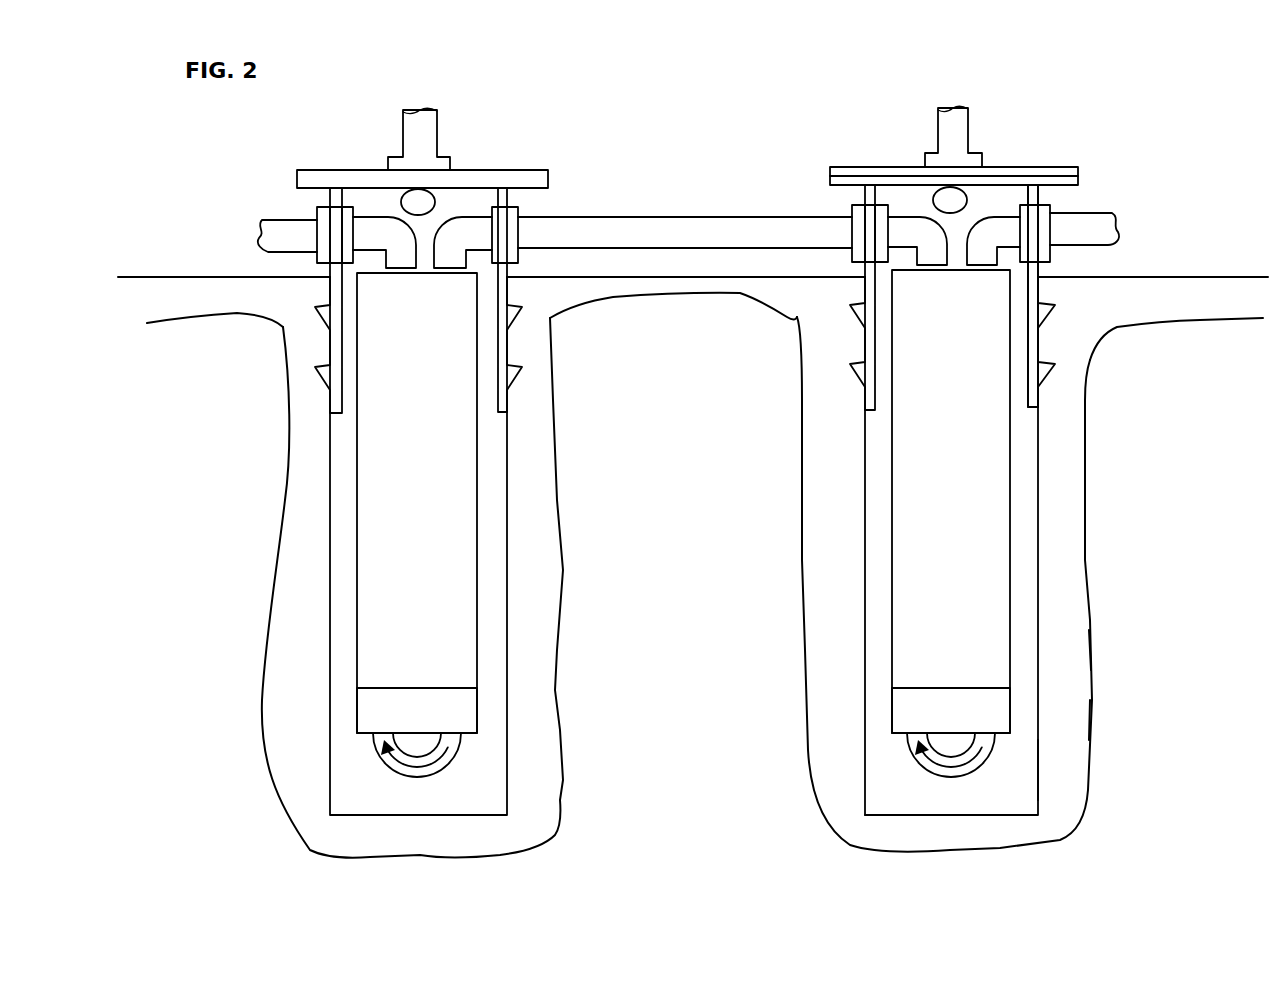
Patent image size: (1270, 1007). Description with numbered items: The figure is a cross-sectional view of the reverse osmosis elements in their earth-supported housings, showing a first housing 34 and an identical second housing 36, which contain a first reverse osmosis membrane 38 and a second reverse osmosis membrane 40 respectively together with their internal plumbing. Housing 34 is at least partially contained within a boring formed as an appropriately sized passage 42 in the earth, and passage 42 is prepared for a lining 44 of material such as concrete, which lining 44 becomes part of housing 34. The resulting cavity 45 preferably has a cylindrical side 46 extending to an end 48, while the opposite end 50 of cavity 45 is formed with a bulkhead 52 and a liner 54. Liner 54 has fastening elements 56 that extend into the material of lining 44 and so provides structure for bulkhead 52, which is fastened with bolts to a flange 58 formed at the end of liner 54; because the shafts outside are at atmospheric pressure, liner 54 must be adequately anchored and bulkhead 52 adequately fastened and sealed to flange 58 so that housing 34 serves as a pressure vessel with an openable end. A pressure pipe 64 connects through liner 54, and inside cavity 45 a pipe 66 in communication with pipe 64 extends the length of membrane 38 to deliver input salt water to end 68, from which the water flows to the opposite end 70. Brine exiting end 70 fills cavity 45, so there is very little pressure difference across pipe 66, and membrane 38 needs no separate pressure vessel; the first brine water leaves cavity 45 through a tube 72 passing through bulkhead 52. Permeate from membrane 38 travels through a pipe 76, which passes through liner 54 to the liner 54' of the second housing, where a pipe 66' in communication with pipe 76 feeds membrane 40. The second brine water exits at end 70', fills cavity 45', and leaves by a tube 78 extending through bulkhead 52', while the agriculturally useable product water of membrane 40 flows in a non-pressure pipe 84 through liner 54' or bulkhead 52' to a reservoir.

The first housing 34 is at (1088, 575).
The second housing 36 is at (560, 574).
The first reverse osmosis membrane 38 is at (1012, 604).
The second reverse osmosis membrane 40 is at (480, 605).
The passage 42 is at (1085, 651).
The lining 44 is at (1092, 719).
The cavity 45 is at (951, 546).
The cavity 45' is at (418, 546).
The side 46 is at (1032, 771).
The end 48 is at (888, 811).
The opposite end 50 is at (885, 182).
The bulkhead 52 is at (966, 154).
The bulkhead 52' is at (438, 270).
The liner 54 is at (1085, 294).
The liner 54' is at (556, 297).
The fastening elements 56 is at (1048, 317).
The flange 58 is at (836, 187).
The pipe 64 is at (1090, 245).
The pipe 66 is at (936, 766).
The pipe 66' is at (401, 769).
The end 68 is at (365, 733).
The opposite end 70 is at (951, 227).
The end 70' is at (435, 228).
The tube 72 is at (962, 124).
The pipe 76 is at (641, 220).
The tube 78 is at (430, 128).
The pipe 84 is at (280, 222).